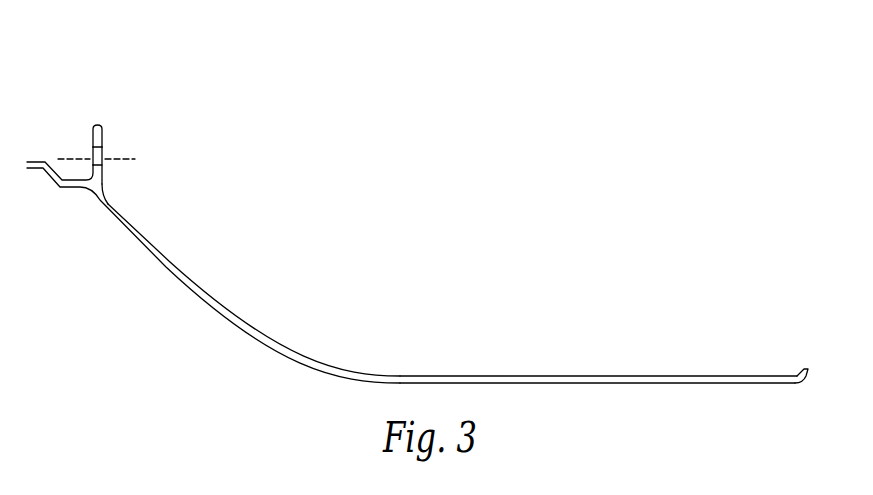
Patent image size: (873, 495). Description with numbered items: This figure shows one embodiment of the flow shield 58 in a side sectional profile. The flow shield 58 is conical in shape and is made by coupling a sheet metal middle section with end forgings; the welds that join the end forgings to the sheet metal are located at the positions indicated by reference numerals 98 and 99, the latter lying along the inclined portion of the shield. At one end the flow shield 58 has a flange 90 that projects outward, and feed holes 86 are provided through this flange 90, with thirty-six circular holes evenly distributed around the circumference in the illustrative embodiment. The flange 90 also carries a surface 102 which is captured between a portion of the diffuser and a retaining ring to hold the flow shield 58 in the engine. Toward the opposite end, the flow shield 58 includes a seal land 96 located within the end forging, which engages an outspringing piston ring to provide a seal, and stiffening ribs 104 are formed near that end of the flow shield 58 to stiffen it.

The flow shield 58 is at (91, 318).
The feed holes 86 is at (103, 165).
The flange 90 is at (97, 118).
The surface 102 is at (103, 134).
The weld location 99 is at (136, 238).
The weld location 98 is at (743, 375).
The seal land 96 is at (772, 385).
The stiffening ribs 104 is at (807, 367).